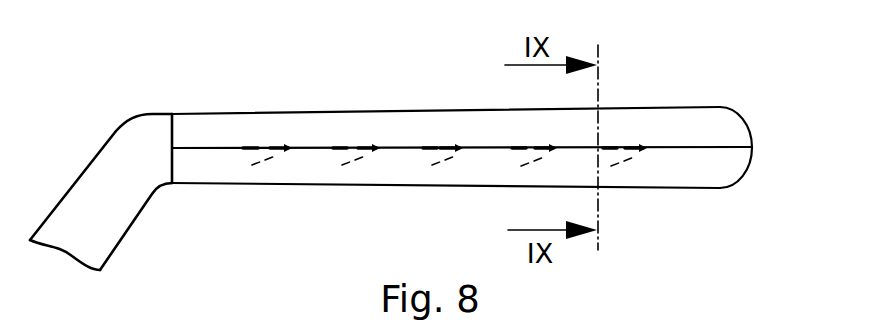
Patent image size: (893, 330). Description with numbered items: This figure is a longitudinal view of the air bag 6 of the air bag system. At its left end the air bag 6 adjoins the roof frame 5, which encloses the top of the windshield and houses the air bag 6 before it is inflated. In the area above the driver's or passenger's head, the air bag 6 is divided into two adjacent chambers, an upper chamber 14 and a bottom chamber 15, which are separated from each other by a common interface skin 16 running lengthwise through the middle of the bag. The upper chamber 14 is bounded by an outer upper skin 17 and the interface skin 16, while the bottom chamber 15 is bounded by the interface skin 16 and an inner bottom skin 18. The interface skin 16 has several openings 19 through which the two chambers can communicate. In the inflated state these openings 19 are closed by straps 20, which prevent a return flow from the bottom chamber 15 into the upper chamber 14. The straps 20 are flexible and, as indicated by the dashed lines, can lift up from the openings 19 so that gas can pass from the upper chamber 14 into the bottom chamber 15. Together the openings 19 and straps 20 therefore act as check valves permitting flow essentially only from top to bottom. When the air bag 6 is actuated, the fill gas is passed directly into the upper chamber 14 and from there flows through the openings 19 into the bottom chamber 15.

The roof frame 5 is at (112, 175).
The air bag 6 is at (469, 142).
The upper chamber 14 is at (722, 128).
The bottom chamber 15 is at (730, 173).
The interface skin 16 is at (407, 147).
The outer upper skin 17 is at (460, 108).
The inner bottom skin 18 is at (390, 187).
The openings 19 is at (262, 148).
The straps 20 is at (353, 150).